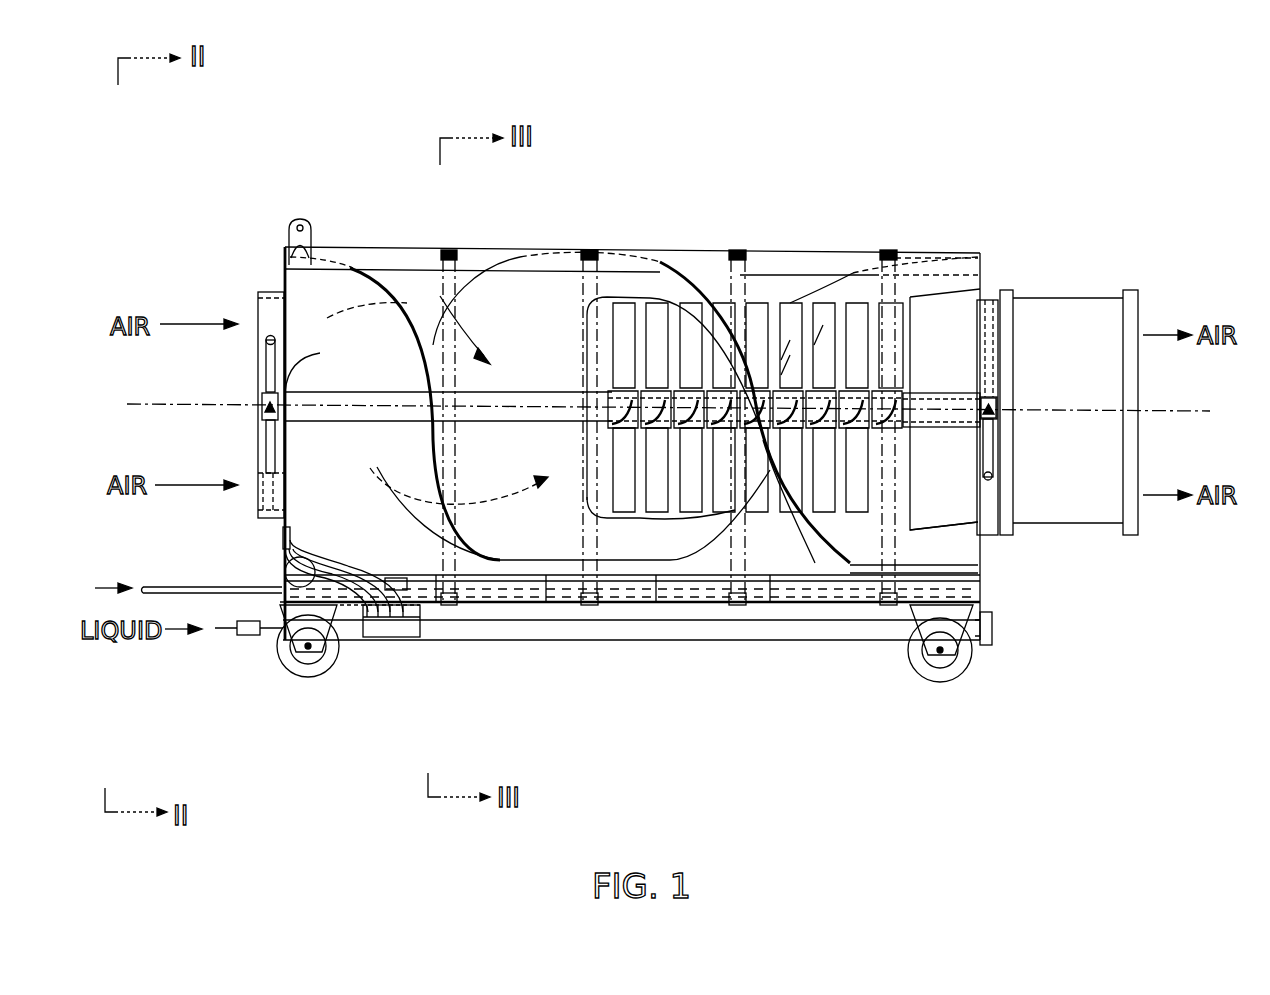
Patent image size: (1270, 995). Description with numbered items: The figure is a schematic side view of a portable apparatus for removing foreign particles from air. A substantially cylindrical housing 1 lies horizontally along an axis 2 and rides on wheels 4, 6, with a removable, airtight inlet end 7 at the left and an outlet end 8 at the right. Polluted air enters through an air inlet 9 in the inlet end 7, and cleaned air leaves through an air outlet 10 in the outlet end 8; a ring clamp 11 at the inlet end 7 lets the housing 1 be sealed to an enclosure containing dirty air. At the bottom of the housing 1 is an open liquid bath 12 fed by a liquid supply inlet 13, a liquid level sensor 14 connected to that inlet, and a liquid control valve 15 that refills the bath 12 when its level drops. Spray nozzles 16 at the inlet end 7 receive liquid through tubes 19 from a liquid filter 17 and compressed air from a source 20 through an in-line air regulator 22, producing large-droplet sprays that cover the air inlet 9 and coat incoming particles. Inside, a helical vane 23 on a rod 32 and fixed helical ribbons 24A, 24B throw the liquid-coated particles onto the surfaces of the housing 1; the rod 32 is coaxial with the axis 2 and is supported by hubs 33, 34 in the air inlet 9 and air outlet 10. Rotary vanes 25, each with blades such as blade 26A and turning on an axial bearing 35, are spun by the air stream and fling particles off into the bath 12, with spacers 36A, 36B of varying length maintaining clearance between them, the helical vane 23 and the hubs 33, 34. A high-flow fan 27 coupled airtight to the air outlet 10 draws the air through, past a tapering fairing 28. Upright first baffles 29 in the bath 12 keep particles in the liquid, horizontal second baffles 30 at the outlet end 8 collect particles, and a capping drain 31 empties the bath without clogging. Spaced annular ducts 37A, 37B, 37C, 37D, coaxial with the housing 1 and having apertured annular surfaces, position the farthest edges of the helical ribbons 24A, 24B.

The housing 1 is at (638, 262).
The axis 2 is at (178, 406).
The wheel 4 is at (300, 672).
The wheel 6 is at (958, 668).
The inlet end 7 is at (284, 276).
The outlet end 8 is at (982, 268).
The air inlet 9 is at (256, 504).
The air outlet 10 is at (995, 302).
The ring clamp 11 is at (297, 219).
The liquid bath 12 is at (893, 600).
The liquid supply inlet 13 is at (262, 640).
The liquid level sensor 14 is at (322, 606).
The liquid control valve 15 is at (396, 578).
The spray nozzles 16 is at (282, 538).
The liquid filter 17 is at (410, 618).
The tubes 19 is at (383, 612).
The source of compressed air 20 is at (165, 588).
The in-line air regulator 22 is at (286, 576).
The helical vane 23 is at (355, 290).
The helical ribbon 24A is at (653, 283).
The helical ribbon 24B is at (967, 283).
The rotary vane 25 is at (760, 303).
The vane blade 26A is at (790, 303).
The fan 27 is at (1080, 322).
The fairing 28 is at (953, 532).
The first baffles 29 is at (550, 585).
The second baffles 30 is at (955, 574).
The capping drain 31 is at (992, 640).
The rod 32 is at (320, 353).
The hub 33 is at (264, 395).
The hub 34 is at (998, 406).
The axial bearing 35 is at (862, 393).
The spacer 36A is at (835, 450).
The spacer 36B is at (930, 393).
The annular duct 37A is at (455, 266).
The annular duct 37B is at (592, 255).
The annular duct 37C is at (739, 262).
The annular duct 37D is at (892, 267).